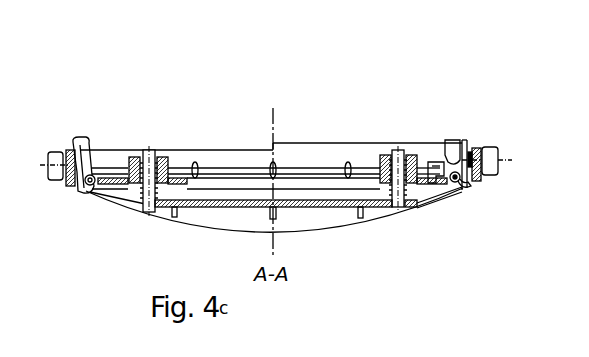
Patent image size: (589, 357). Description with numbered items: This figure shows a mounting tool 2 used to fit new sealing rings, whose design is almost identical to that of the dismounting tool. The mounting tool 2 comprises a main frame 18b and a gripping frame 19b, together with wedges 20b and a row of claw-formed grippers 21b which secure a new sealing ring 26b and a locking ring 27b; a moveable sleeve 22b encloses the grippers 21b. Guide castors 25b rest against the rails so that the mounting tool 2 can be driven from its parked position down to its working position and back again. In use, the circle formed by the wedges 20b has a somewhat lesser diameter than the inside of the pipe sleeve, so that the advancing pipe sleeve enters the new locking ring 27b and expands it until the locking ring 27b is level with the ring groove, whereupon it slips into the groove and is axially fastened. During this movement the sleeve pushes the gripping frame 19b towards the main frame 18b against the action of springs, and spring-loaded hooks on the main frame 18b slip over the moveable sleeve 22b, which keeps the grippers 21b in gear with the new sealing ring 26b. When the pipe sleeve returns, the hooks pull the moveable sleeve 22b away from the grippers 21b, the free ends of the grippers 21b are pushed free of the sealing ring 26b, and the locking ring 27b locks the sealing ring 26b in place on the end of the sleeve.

The mounting tool 2 is at (201, 131).
The main frame 18b is at (328, 200).
The gripping frame 19b is at (423, 185).
The wedges 20b is at (457, 183).
The claw-formed grippers 21b is at (467, 145).
The moveable sleeve 22b is at (479, 146).
The guide castors 25b is at (53, 150).
The new sealing ring 26b is at (447, 138).
The locking ring 27b is at (440, 162).